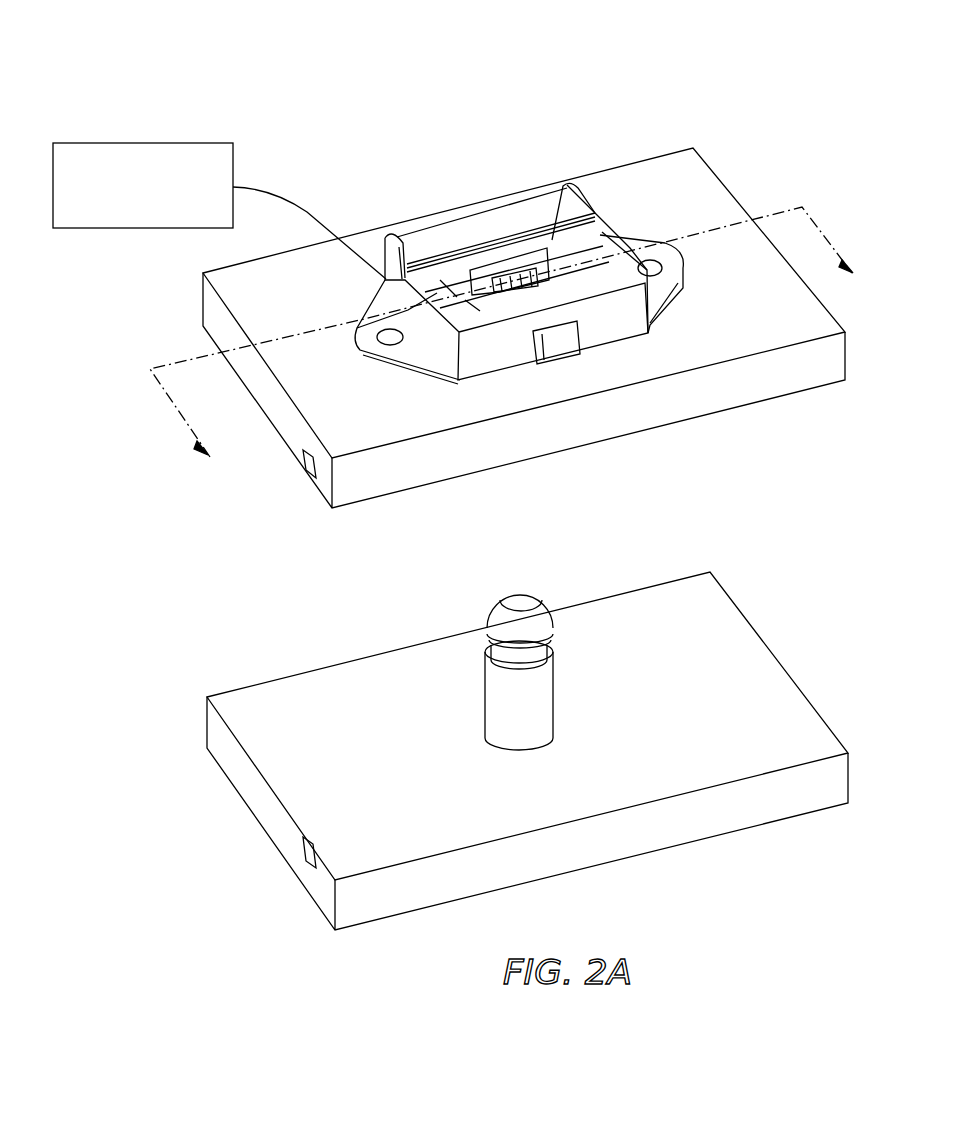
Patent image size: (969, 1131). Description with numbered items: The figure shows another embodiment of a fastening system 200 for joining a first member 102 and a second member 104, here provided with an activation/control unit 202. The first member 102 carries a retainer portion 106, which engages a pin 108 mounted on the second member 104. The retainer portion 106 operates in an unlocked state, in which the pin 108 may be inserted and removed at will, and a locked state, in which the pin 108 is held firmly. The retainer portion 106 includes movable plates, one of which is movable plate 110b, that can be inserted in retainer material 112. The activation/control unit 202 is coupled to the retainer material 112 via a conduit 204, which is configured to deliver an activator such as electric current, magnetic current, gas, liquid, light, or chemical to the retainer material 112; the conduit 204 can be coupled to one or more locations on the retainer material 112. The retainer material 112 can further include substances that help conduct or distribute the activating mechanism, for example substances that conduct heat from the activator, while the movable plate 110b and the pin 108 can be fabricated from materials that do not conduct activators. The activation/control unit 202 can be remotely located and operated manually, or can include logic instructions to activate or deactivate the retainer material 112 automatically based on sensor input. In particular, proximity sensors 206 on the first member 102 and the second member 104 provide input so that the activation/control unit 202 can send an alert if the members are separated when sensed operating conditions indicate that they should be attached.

The fastening system 200 is at (260, 98).
The activation/control unit 202 is at (95, 228).
The conduit 204 is at (273, 186).
The first member 102 is at (510, 263).
The retainer portion 106 is at (493, 218).
The movable plate 110b is at (553, 243).
The retainer material 112 is at (593, 237).
The proximity sensor 206 is at (307, 457).
The second member 104 is at (275, 697).
The pin 108 is at (529, 590).